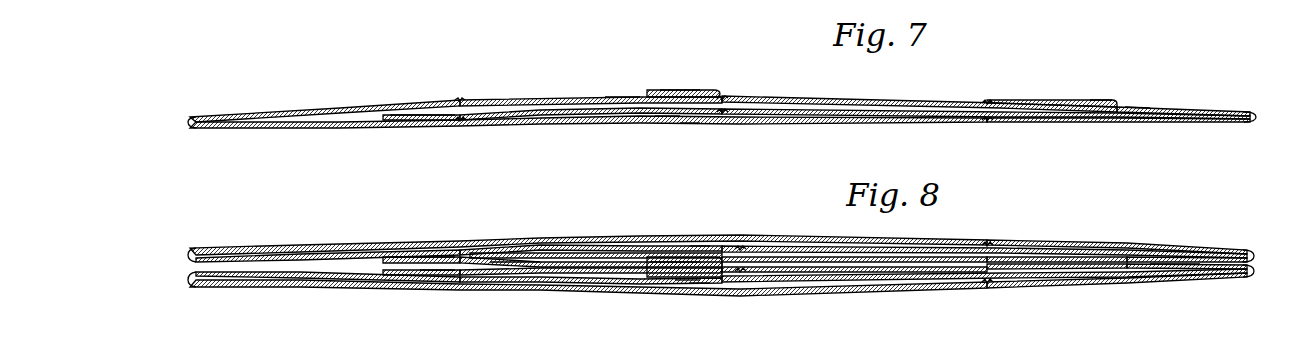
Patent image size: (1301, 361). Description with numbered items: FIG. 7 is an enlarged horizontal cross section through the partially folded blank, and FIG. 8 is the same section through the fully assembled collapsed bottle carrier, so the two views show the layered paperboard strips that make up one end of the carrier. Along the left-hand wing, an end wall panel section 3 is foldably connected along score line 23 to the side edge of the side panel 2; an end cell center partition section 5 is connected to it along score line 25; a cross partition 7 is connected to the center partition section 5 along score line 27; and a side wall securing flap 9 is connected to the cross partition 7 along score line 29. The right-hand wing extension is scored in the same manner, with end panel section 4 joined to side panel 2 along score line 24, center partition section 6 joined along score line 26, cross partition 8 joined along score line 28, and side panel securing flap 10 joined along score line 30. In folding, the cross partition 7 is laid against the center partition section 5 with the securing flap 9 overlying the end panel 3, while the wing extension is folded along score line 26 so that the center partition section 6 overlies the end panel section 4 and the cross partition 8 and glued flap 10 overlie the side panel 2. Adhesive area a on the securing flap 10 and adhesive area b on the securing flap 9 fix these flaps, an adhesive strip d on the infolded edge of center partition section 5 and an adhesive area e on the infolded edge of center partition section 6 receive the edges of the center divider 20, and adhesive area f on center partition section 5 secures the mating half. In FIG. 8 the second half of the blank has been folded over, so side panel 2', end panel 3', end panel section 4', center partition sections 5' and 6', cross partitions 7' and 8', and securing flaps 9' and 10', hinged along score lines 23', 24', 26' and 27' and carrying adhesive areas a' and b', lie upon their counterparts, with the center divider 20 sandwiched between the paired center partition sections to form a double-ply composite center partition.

In FIG. 7, the side panel 2 is at (588, 137).
In FIG. 8, the side panel 2 is at (588, 303).
In FIG. 7, the end wall panel section 3 is at (325, 97).
In FIG. 8, the end wall panel section 3 is at (328, 298).
In FIG. 7, the end panel section 4 is at (1118, 134).
In FIG. 8, the end panel section 4 is at (1117, 296).
In FIG. 7, the end cell center partition section 5 is at (591, 83).
In FIG. 8, the end cell center partition section 5 is at (591, 299).
In FIG. 7, the end cell center partition section 6 is at (1183, 91).
In FIG. 8, the end cell center partition section 6 is at (1161, 292).
In FIG. 7, the cross partition 7 is at (591, 132).
In FIG. 8, the cross partition 7 is at (591, 301).
In FIG. 7, the cross partition 8 is at (986, 94).
In FIG. 8, the cross partition 8 is at (984, 297).
In FIG. 7, the side wall securing flap 9 is at (770, 88).
In FIG. 8, the side wall securing flap 9 is at (810, 263).
In FIG. 7, the side panel securing flap 10 is at (693, 139).
In FIG. 8, the side panel securing flap 10 is at (709, 306).
In FIG. 7, the center divider 20 is at (813, 98).
In FIG. 8, the center divider 20 is at (813, 264).
In FIG. 7, the score line 23 is at (179, 142).
In FIG. 8, the score line 23 is at (182, 296).
In FIG. 7, the score line 24 is at (1002, 135).
In FIG. 8, the score line 24 is at (996, 303).
In FIG. 7, the score line 25 is at (457, 98).
In FIG. 7, the score line 26 is at (1263, 104).
In FIG. 8, the score line 26 is at (1267, 287).
In FIG. 7, the score line 27 is at (739, 82).
In FIG. 8, the score line 27 is at (753, 295).
In FIG. 7, the score line 28 is at (987, 100).
In FIG. 7, the score line 29 is at (461, 126).
In FIG. 7, the score line 30 is at (722, 115).
In FIG. 7, the area of adhesive a is at (666, 139).
In FIG. 8, the area of adhesive a is at (689, 315).
In FIG. 7, the area of adhesive b is at (421, 136).
In FIG. 8, the area of adhesive b is at (421, 300).
In FIG. 7, the area of adhesive d is at (697, 89).
In FIG. 8, the area of adhesive d is at (676, 278).
In FIG. 7, the area of adhesive e is at (1040, 110).
In FIG. 8, the area of adhesive e is at (1030, 270).
In FIG. 7, the area of adhesive f is at (665, 89).
In FIG. 8, the area of adhesive f is at (500, 264).
In FIG. 8, the side panel 2' is at (588, 230).
In FIG. 8, the end wall panel section 3' is at (328, 236).
In FIG. 8, the end panel section 4' is at (1117, 228).
In FIG. 8, the end cell center partition section 5' is at (596, 232).
In FIG. 8, the end cell center partition section 6' is at (1162, 231).
In FIG. 8, the cross partition 7' is at (591, 228).
In FIG. 8, the cross partition 8' is at (984, 234).
In FIG. 8, the side wall securing flap 9' is at (422, 232).
In FIG. 8, the side panel securing flap 10' is at (709, 221).
In FIG. 8, the score line 23' is at (178, 239).
In FIG. 8, the score line 24' is at (985, 224).
In FIG. 8, the score line 26' is at (1263, 237).
In FIG. 8, the score line 27' is at (765, 229).
In FIG. 8, the area of adhesive a' is at (591, 232).
In FIG. 8, the area of adhesive b' is at (421, 229).